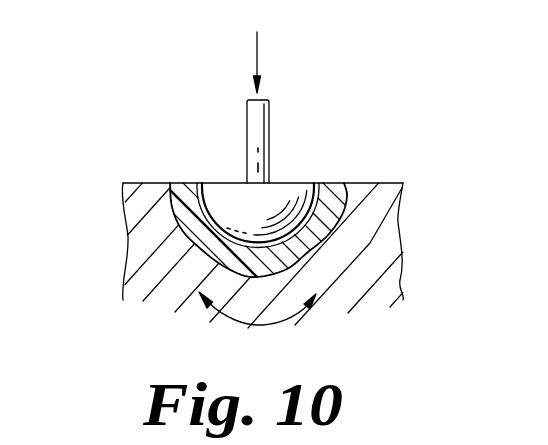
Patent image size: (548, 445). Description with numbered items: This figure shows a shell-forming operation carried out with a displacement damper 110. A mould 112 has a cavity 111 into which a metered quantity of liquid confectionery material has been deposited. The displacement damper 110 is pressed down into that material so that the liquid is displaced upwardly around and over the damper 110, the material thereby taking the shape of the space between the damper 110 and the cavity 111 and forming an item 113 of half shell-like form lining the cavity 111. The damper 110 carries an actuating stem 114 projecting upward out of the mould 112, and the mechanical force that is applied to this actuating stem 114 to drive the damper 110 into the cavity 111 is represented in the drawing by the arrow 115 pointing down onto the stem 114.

The displacement damper 110 is at (270, 198).
The cavity 111 is at (333, 230).
The mould 112 is at (128, 206).
The item of half shell-like form 113 is at (320, 200).
The actuating stem 114 is at (260, 140).
The arrow 115 is at (257, 52).